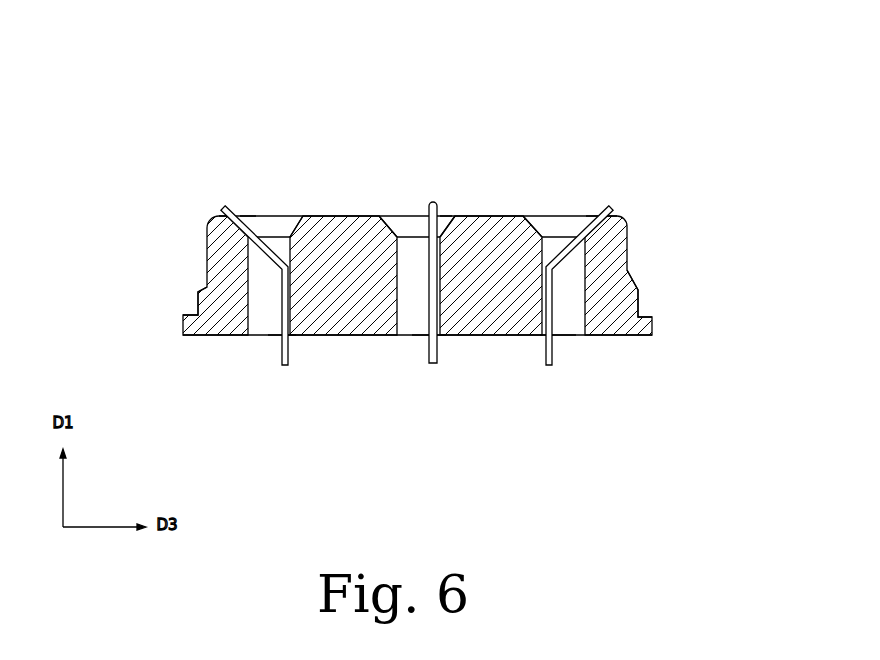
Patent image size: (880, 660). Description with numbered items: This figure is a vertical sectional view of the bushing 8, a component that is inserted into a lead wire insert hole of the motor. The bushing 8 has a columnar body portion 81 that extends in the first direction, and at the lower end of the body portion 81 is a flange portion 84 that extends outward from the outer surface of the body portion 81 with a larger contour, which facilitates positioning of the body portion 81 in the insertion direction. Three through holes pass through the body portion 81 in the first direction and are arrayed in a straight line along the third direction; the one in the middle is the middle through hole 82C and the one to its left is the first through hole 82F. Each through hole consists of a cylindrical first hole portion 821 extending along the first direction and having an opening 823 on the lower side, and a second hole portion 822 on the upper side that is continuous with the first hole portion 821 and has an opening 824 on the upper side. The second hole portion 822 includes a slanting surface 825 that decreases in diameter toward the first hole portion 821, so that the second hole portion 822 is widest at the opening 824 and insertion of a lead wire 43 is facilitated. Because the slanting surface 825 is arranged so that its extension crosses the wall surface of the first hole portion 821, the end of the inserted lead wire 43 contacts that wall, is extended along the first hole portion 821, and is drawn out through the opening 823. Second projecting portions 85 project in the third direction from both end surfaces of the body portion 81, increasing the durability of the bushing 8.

The bushing 8 is at (429, 221).
The body portion 81 is at (203, 238).
The first through hole 82F is at (296, 338).
The middle through hole 82C is at (441, 337).
The first hole portion 821 is at (256, 338).
The second hole portion 822 is at (266, 214).
The opening 823 is at (276, 340).
The opening 824 is at (250, 210).
The slanting surface 825 is at (296, 228).
The flange portion 84 is at (655, 325).
The second projecting portion 85 is at (203, 280).
The lead wire 43 is at (221, 204).